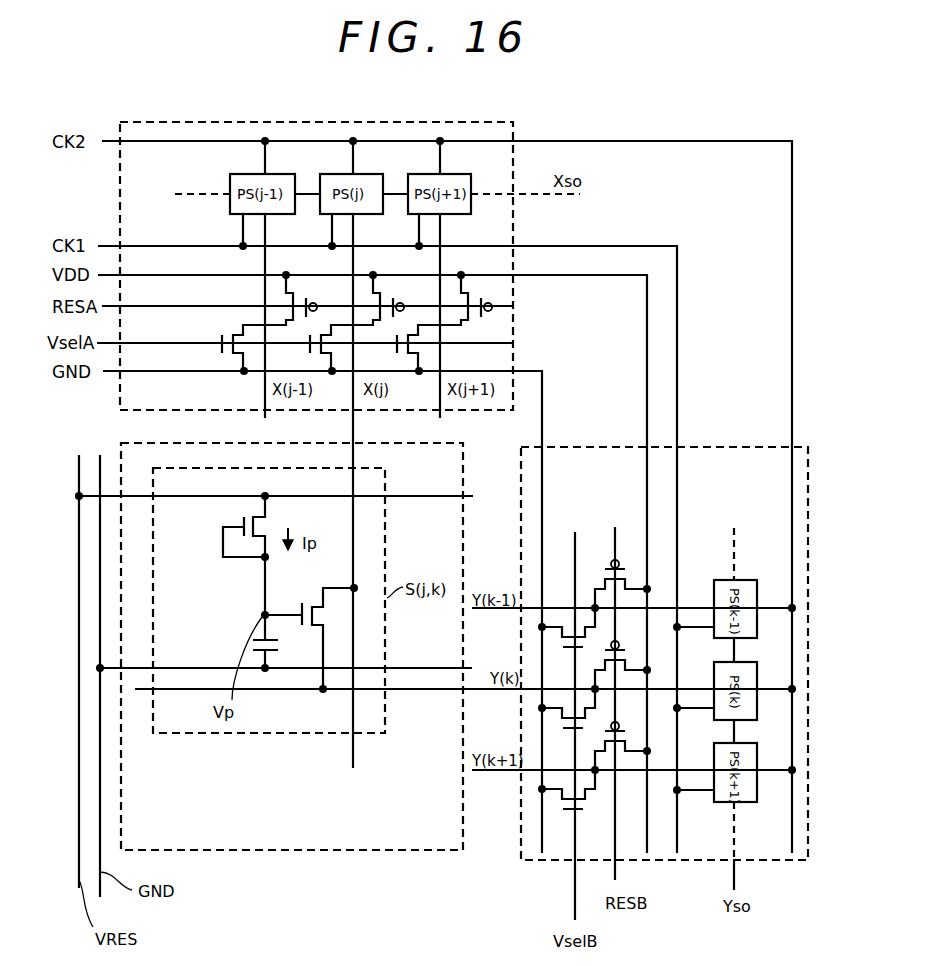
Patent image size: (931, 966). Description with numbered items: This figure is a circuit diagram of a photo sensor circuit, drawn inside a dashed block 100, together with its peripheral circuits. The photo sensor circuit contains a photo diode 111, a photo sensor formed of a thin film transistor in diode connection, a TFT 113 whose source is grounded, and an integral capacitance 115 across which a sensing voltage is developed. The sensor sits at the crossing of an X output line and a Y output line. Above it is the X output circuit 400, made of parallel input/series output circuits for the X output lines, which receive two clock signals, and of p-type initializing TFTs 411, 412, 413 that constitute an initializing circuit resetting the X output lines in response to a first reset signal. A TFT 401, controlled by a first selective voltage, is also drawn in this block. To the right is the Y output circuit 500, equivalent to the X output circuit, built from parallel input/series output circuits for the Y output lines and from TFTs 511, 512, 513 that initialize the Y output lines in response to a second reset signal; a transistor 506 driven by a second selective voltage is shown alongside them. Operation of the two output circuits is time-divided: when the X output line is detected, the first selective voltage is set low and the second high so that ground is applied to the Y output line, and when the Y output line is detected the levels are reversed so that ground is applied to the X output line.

The pixel circuit 100 is at (402, 852).
The photo diode 111 is at (271, 527).
The TFT 113 is at (315, 603).
The integral capacitance 115 is at (273, 633).
The X output circuit 400 is at (273, 121).
The TFT 401 is at (225, 364).
The TFT 411 is at (300, 296).
The TFT 412 is at (387, 296).
The TFT 413 is at (474, 296).
The Y output circuit 500 is at (732, 447).
The transistor 506 is at (560, 638).
The TFT 511 is at (628, 582).
The TFT 512 is at (628, 663).
The TFT 513 is at (628, 743).